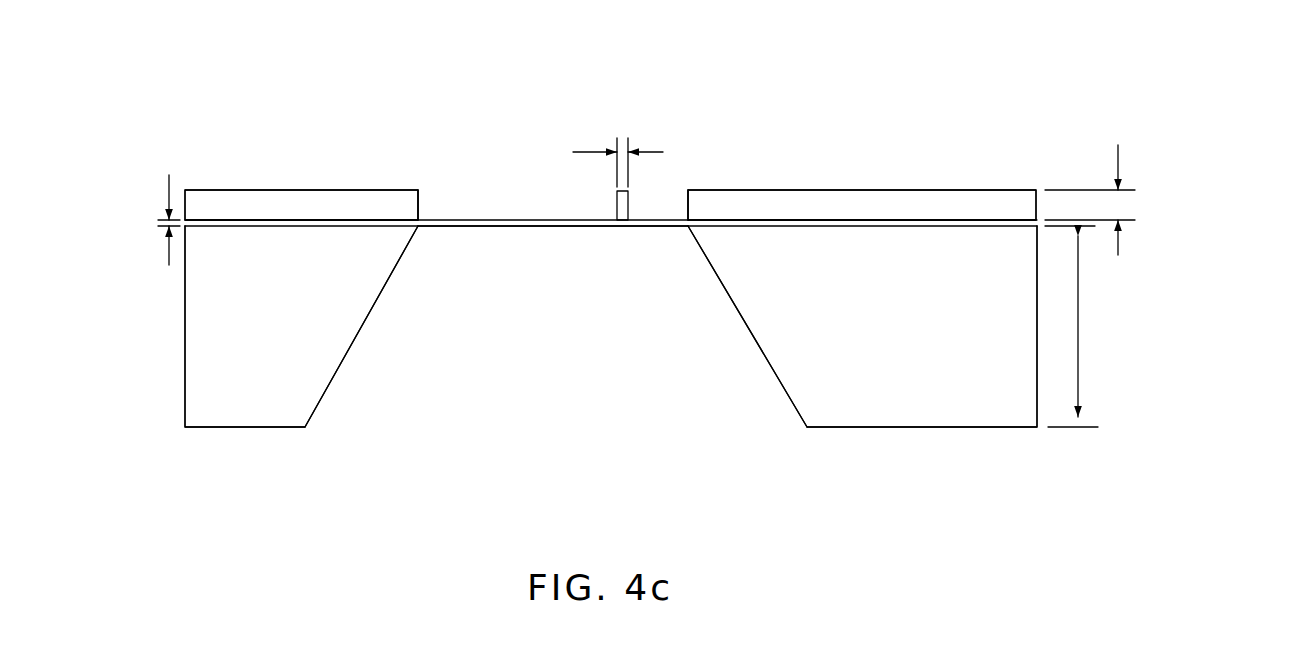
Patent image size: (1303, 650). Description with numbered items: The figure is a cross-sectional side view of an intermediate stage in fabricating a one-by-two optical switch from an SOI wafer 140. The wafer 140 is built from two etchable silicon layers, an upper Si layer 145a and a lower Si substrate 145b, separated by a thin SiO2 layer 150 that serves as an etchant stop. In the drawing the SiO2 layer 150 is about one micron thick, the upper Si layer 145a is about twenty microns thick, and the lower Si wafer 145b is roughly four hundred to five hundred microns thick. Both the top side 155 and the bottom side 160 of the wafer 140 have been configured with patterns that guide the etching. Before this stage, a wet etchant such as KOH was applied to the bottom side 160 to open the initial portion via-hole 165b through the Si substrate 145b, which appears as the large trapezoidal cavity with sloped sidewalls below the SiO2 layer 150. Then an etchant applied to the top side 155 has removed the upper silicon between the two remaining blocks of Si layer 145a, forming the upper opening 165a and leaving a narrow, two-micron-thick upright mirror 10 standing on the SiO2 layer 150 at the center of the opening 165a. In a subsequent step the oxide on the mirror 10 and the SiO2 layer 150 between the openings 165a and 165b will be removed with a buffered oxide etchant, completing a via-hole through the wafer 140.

The mirror 10 is at (617, 208).
The SOI wafer 140 is at (182, 112).
The Si layer 145a is at (1183, 178).
The Si substrate 145b is at (1185, 228).
The SiO2 layer 150 is at (107, 200).
The top side 155 is at (323, 190).
The bottom side 160 is at (288, 428).
The via-hole 165a is at (490, 157).
The initial portion via-hole 165b is at (550, 408).